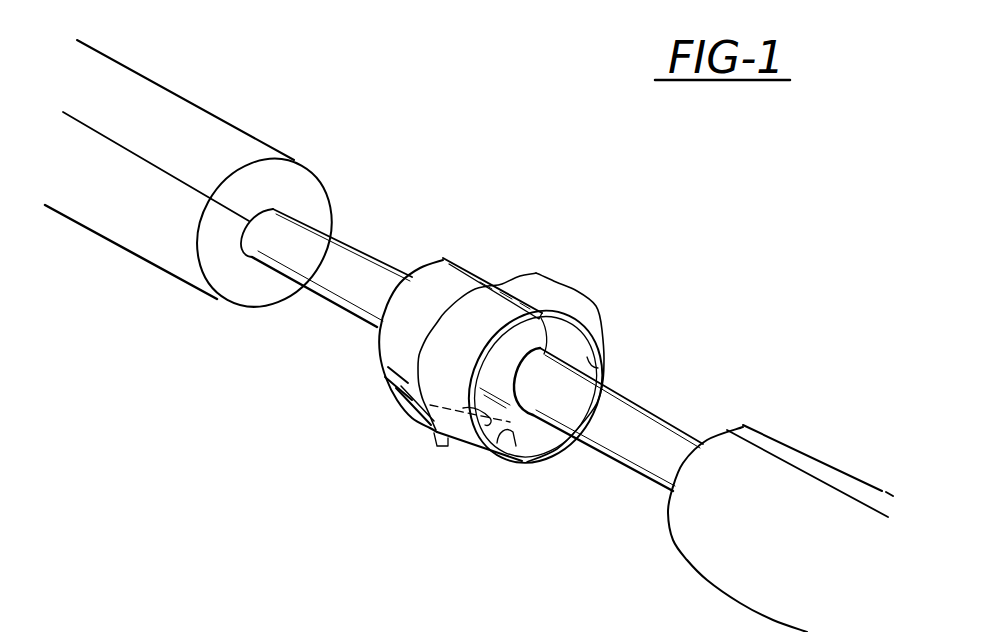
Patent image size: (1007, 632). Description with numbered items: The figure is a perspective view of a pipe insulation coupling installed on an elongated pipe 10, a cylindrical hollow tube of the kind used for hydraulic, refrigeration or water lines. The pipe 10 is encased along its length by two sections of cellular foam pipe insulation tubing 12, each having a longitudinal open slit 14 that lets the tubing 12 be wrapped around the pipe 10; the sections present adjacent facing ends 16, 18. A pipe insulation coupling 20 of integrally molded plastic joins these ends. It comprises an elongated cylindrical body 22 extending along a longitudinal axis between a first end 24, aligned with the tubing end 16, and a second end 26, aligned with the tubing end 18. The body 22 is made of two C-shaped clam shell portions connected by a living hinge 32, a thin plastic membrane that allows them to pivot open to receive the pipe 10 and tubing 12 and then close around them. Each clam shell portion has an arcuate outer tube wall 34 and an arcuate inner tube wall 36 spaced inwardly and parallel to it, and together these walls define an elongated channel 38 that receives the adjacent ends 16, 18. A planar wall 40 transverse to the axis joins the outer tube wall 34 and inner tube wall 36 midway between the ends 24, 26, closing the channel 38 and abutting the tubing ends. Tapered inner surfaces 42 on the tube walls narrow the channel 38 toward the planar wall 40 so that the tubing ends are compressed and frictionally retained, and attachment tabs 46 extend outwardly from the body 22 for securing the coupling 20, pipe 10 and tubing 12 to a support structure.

The pipe 10 is at (375, 258).
The pipe insulation tubing 12 is at (189, 99).
The longitudinal open slit 14 is at (163, 168).
The first adjacent facing end 16 is at (240, 290).
The second adjacent facing end 18 is at (670, 513).
The pipe insulation coupling 20 is at (659, 275).
The elongated cylindrical body 22 is at (485, 260).
The first end 24 is at (377, 348).
The second end 26 is at (604, 352).
The living hinge 32 is at (461, 628).
The outer tube wall 34 is at (510, 453).
The inner tube wall 36 is at (567, 397).
The channel 38 is at (535, 435).
The planar wall 40 is at (457, 413).
The tapered inner surfaces 42 is at (517, 357).
The attachment tabs 46 is at (437, 435).